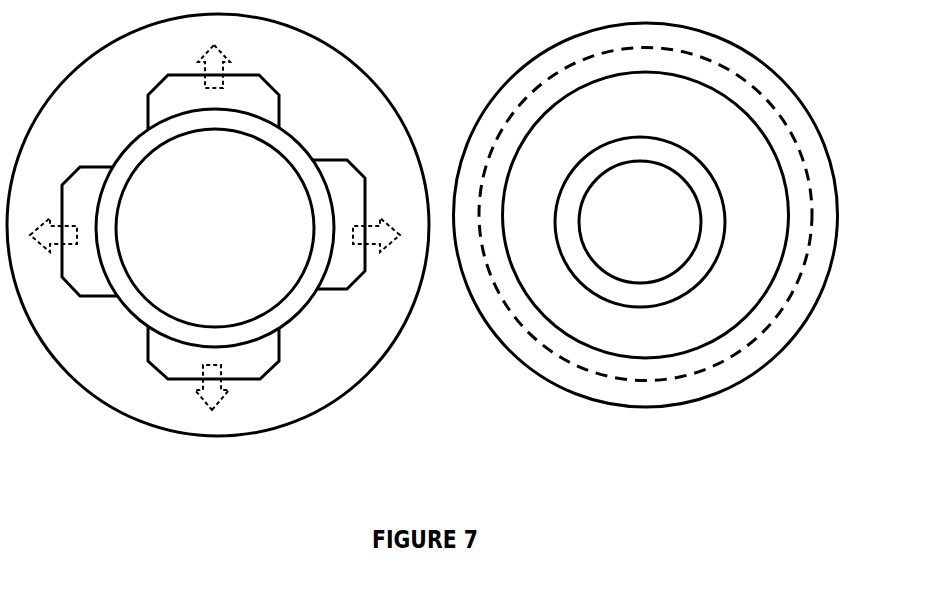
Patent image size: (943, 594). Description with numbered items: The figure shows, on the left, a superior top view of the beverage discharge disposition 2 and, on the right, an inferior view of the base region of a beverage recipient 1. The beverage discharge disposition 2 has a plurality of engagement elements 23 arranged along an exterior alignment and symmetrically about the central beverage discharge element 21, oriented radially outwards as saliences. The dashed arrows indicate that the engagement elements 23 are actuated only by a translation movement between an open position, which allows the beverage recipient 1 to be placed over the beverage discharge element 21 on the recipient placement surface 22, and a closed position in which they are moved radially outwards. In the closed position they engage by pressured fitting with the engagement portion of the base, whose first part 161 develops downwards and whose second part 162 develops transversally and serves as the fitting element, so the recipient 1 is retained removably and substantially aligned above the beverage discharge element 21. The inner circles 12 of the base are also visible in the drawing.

The beverage recipient 1 is at (645, 237).
The beverage discharge disposition 2 is at (218, 242).
The inner hub 12 is at (640, 222).
The beverage discharge element 21 is at (215, 228).
The recipient placement surface 22 is at (256, 420).
The engagement elements 23 is at (215, 227).
The first part 161 is at (645, 215).
The second part 162 is at (708, 366).